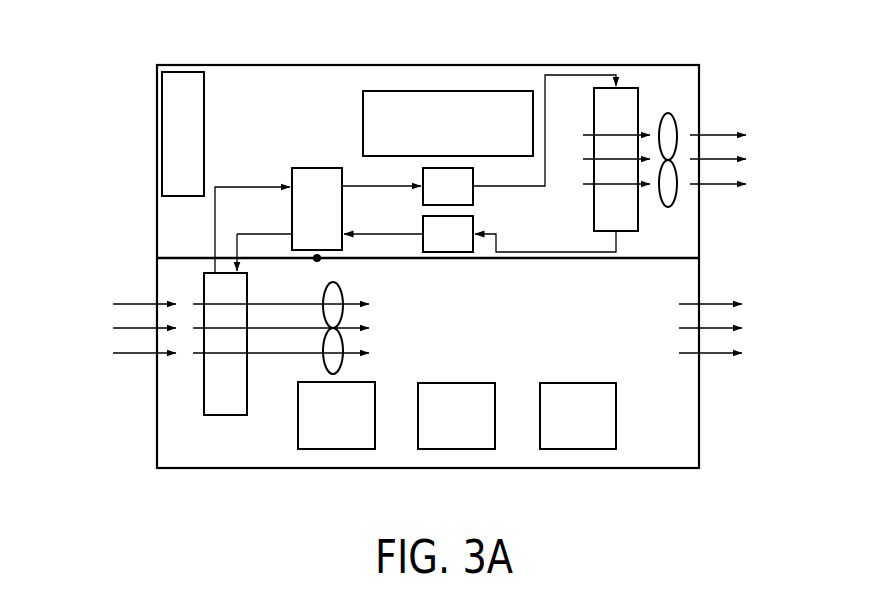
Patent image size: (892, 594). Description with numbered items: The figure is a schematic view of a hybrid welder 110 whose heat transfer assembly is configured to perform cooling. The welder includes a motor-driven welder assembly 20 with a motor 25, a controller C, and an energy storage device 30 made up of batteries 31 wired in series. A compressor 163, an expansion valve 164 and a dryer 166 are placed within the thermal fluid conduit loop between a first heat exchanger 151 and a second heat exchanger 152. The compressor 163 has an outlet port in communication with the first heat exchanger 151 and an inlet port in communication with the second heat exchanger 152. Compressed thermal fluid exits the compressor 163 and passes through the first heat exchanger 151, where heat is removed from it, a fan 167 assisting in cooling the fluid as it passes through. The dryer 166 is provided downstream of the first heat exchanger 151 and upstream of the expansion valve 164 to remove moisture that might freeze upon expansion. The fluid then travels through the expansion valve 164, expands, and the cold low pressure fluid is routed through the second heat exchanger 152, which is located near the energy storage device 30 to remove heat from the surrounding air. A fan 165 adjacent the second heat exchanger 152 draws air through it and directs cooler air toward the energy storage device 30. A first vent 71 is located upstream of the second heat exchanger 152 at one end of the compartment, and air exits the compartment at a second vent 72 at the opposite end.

The hybrid welder 110 is at (184, 45).
The controller C is at (204, 113).
The motor-driven welder assembly 20 is at (478, 88).
The motor 25 is at (383, 123).
The expansion valve 164 is at (334, 196).
The compressor 163 is at (466, 196).
The dryer 166 is at (466, 244).
The first heat exchanger 151 is at (632, 88).
The fan 167 is at (677, 125).
The second heat exchanger 152 is at (212, 285).
The fan 165 is at (318, 366).
The first vent 71 is at (149, 364).
The second vent 72 is at (709, 293).
The energy storage device 30 is at (457, 449).
The batteries 31 is at (347, 424).